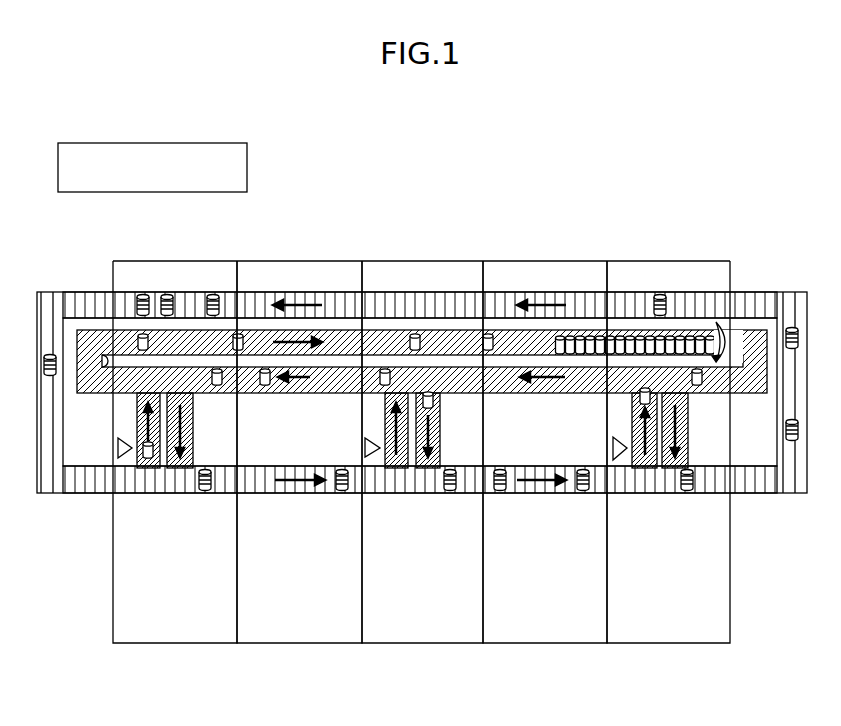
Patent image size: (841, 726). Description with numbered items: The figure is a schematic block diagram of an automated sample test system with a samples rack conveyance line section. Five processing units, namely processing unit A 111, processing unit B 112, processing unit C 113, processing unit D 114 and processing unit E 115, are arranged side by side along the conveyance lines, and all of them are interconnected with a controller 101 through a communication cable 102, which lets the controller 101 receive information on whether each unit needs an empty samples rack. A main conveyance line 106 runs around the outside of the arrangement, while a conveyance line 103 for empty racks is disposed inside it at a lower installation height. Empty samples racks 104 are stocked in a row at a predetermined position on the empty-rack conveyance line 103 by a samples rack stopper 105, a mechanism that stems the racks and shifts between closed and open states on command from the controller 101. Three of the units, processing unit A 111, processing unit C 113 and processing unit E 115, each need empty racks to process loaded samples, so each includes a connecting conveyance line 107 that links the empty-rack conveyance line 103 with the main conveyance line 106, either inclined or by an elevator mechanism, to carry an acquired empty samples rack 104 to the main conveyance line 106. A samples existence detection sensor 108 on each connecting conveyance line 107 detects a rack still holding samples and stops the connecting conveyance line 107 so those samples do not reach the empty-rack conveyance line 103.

The controller 101 is at (247, 165).
The communication cable 102 is at (153, 192).
The conveyance line for empty racks 103 is at (375, 340).
The empty samples rack 104 is at (625, 342).
The samples rack stopper 105 is at (722, 325).
The main conveyance line 106 is at (109, 492).
The connecting conveyance line 107 is at (652, 463).
The samples existence detection sensor 108 is at (622, 453).
The processing unit A 111 is at (183, 635).
The processing unit B 112 is at (307, 635).
The processing unit C 113 is at (433, 635).
The processing unit D 114 is at (557, 635).
The processing unit E 115 is at (677, 635).